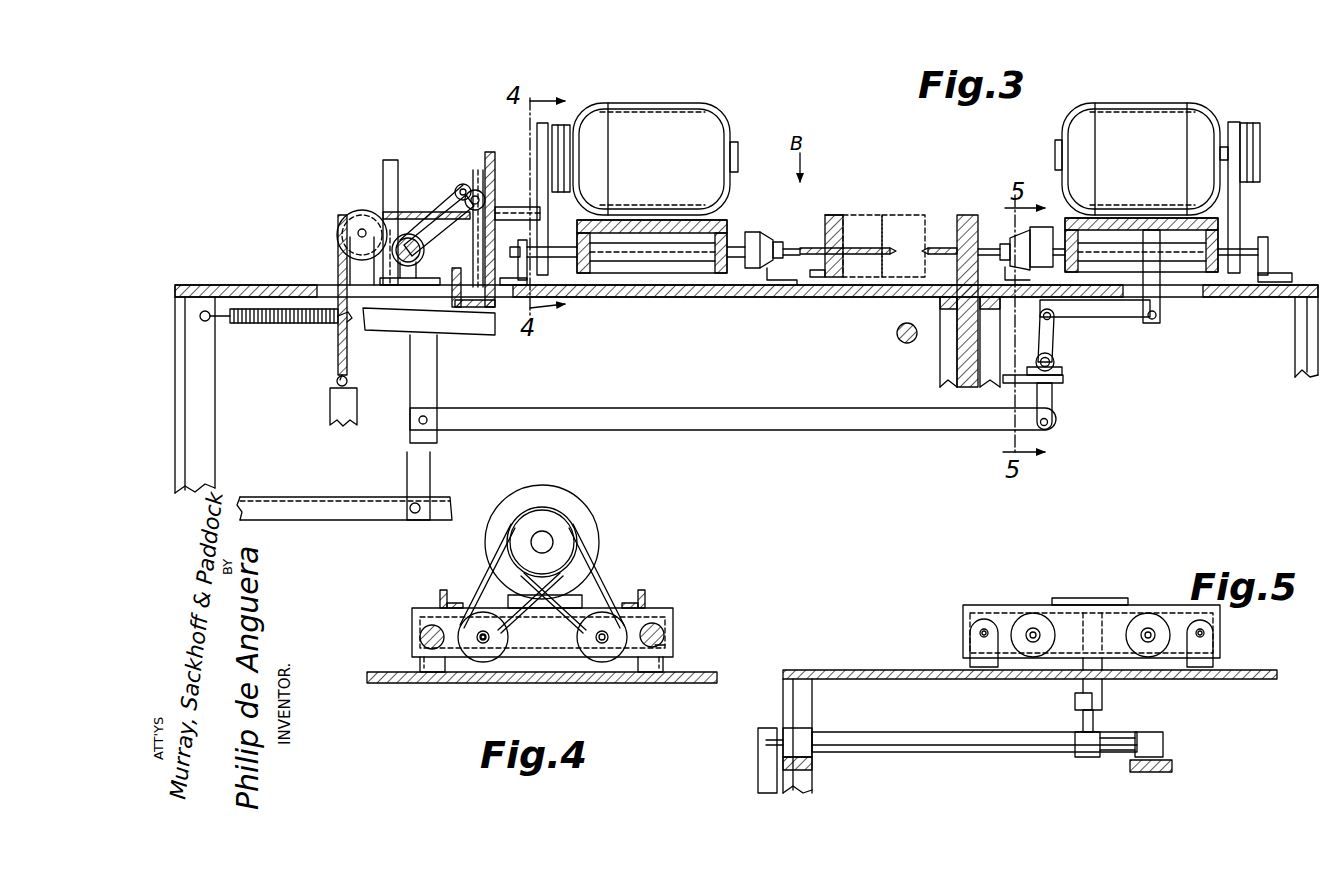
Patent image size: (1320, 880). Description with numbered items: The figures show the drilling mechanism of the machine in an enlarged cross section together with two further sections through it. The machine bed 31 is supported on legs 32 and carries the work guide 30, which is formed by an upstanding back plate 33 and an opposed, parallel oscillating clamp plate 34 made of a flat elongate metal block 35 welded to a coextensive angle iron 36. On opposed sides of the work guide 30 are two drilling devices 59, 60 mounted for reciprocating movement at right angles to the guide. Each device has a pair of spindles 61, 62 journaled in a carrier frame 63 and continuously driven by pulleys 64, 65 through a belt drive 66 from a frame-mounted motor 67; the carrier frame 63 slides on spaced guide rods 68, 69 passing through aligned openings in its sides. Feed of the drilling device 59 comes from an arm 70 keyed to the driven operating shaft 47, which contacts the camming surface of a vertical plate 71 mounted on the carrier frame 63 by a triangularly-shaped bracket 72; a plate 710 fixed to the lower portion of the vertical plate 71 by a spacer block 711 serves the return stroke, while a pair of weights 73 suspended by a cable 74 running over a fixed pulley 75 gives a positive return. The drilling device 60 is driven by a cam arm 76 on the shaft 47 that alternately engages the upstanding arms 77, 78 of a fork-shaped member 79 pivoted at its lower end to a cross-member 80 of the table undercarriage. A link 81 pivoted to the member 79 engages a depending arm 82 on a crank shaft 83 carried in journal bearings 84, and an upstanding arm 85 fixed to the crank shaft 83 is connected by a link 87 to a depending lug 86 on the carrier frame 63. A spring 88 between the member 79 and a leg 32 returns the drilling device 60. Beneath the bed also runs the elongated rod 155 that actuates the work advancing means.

In FIG. 3, the work guide 30 is at (901, 266).
In FIG. 3, the machine bed 31 is at (234, 285).
In FIG. 4, the machine bed 31 is at (712, 684).
In FIG. 5, the machine bed 31 is at (903, 670).
In FIG. 3, the legs 32 is at (205, 398).
In FIG. 5, the legs 32 is at (803, 695).
In FIG. 3, the back plate 33 is at (968, 215).
In FIG. 3, the clamp plate 34 is at (838, 215).
In FIG. 3, the metal block 35 is at (848, 218).
In FIG. 3, the angle iron 36 is at (828, 222).
In FIG. 3, the operating shaft 47 is at (405, 236).
In FIG. 3, the drilling device 59 is at (756, 230).
In FIG. 3, the drilling device 60 is at (1040, 234).
In FIG. 5, the drilling device 60 is at (1056, 620).
In FIG. 4, the spindle 61 is at (483, 640).
In FIG. 4, the spindle 62 is at (666, 633).
In FIG. 3, the carrier frame 63 is at (657, 236).
In FIG. 4, the carrier frame 63 is at (662, 610).
In FIG. 5, the carrier frame 63 is at (996, 618).
In FIG. 4, the pulley 64 is at (470, 610).
In FIG. 4, the pulley 65 is at (612, 620).
In FIG. 3, the belt drive 66 is at (530, 186).
In FIG. 4, the belt drive 66 is at (603, 567).
In FIG. 3, the motor 67 is at (648, 128).
In FIG. 4, the motor 67 is at (580, 514).
In FIG. 5, the motor 67 is at (1110, 600).
In FIG. 4, the guide rod 68 is at (420, 637).
In FIG. 4, the guide rod 69 is at (662, 645).
In FIG. 3, the arm 70 is at (448, 222).
In FIG. 3, the vertical plate 71 is at (490, 152).
In FIG. 3, the triangularly-shaped bracket 72 is at (576, 128).
In FIG. 4, the triangularly-shaped bracket 72 is at (440, 597).
In FIG. 3, the weights 73 is at (335, 410).
In FIG. 3, the cable 74 is at (338, 258).
In FIG. 3, the fixed pulley 75 is at (350, 220).
In FIG. 3, the cam arm 76 is at (432, 203).
In FIG. 3, the upstanding arm 77 is at (472, 188).
In FIG. 3, the upstanding arm 78 is at (383, 173).
In FIG. 3, the fork-shaped member 79 is at (418, 398).
In FIG. 3, the cross-member 80 is at (362, 508).
In FIG. 3, the link 81 is at (655, 392).
In FIG. 3, the depending arm 82 is at (1054, 398).
In FIG. 5, the depending arm 82 is at (758, 775).
In FIG. 3, the crank shaft 83 is at (1053, 360).
In FIG. 5, the crank shaft 83 is at (950, 732).
In FIG. 3, the journal bearings 84 is at (1062, 371).
In FIG. 5, the journal bearings 84 is at (808, 738).
In FIG. 3, the upstanding arm 85 is at (1055, 332).
In FIG. 5, the upstanding arm 85 is at (1094, 722).
In FIG. 3, the depending lug 86 is at (1161, 312).
In FIG. 5, the depending lug 86 is at (1102, 690).
In FIG. 3, the link 87 is at (1130, 322).
In FIG. 5, the link 87 is at (1075, 700).
In FIG. 3, the spring 88 is at (275, 325).
In FIG. 3, the elongated rod 155 is at (904, 343).
In FIG. 3, the plate 710 is at (450, 320).
In FIG. 3, the spacer block 711 is at (480, 331).